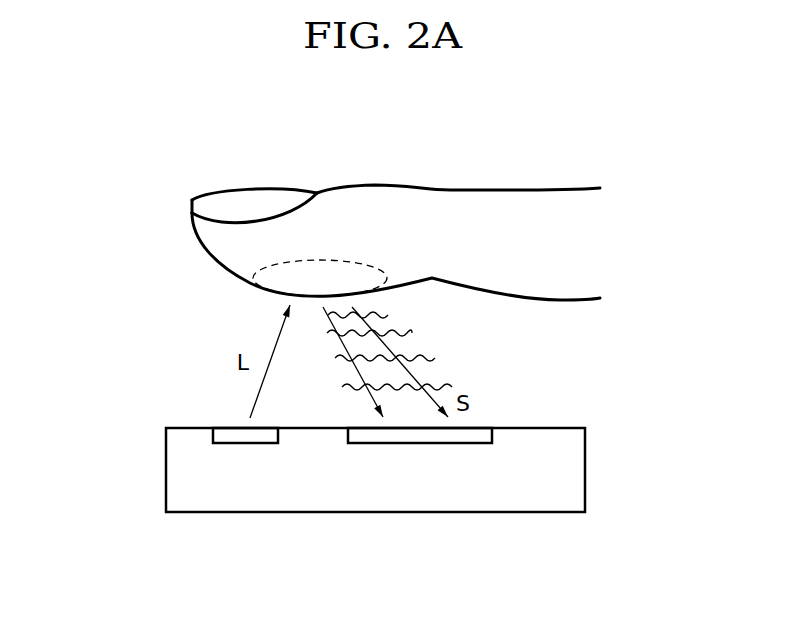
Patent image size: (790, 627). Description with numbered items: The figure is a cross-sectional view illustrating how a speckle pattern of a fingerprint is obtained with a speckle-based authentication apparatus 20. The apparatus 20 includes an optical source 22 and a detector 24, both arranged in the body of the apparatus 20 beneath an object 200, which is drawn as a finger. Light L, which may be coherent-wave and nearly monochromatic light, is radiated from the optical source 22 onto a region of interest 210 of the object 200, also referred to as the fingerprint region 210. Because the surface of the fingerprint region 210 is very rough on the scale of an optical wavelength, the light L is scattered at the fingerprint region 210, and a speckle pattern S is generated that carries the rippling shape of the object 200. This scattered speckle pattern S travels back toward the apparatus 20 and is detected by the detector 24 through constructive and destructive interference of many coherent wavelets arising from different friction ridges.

The object 200 is at (372, 200).
The region of interest 210 is at (270, 268).
The speckle-based authentication apparatus 20 is at (175, 478).
The optical source 22 is at (243, 445).
The detector 24 is at (422, 445).